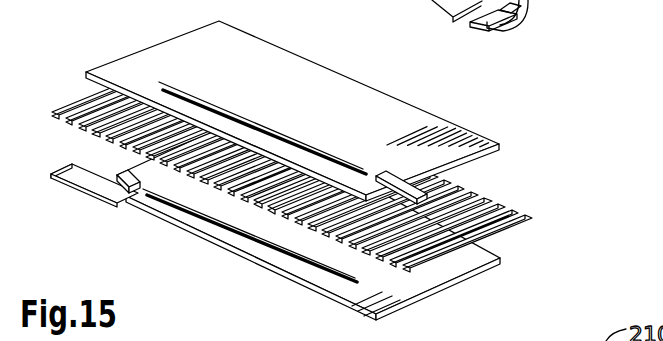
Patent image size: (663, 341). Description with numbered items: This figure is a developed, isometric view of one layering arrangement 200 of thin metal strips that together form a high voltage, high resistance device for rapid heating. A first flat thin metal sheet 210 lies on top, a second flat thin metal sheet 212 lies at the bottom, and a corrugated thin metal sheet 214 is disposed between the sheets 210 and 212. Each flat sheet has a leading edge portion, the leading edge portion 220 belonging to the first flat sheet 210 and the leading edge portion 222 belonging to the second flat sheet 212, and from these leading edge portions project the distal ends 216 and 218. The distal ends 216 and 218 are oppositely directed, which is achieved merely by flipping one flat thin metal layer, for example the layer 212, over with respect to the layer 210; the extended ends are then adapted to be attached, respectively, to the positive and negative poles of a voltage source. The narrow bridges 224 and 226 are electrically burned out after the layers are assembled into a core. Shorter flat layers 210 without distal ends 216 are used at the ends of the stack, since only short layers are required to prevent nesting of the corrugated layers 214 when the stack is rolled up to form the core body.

The stacked plate assembly 200 is at (328, 168).
The first flat thin metal sheet 210 is at (510, 157).
The second flat thin metal sheet 212 is at (462, 301).
The corrugated thin metal sheet 214 is at (522, 236).
The projecting distal end 216 is at (390, 192).
The projecting distal end 218 is at (70, 180).
The leading edge portion 220 is at (253, 138).
The leading edge portion 222 is at (229, 240).
The narrow bridge 224 is at (373, 174).
The narrow bridge 226 is at (126, 188).